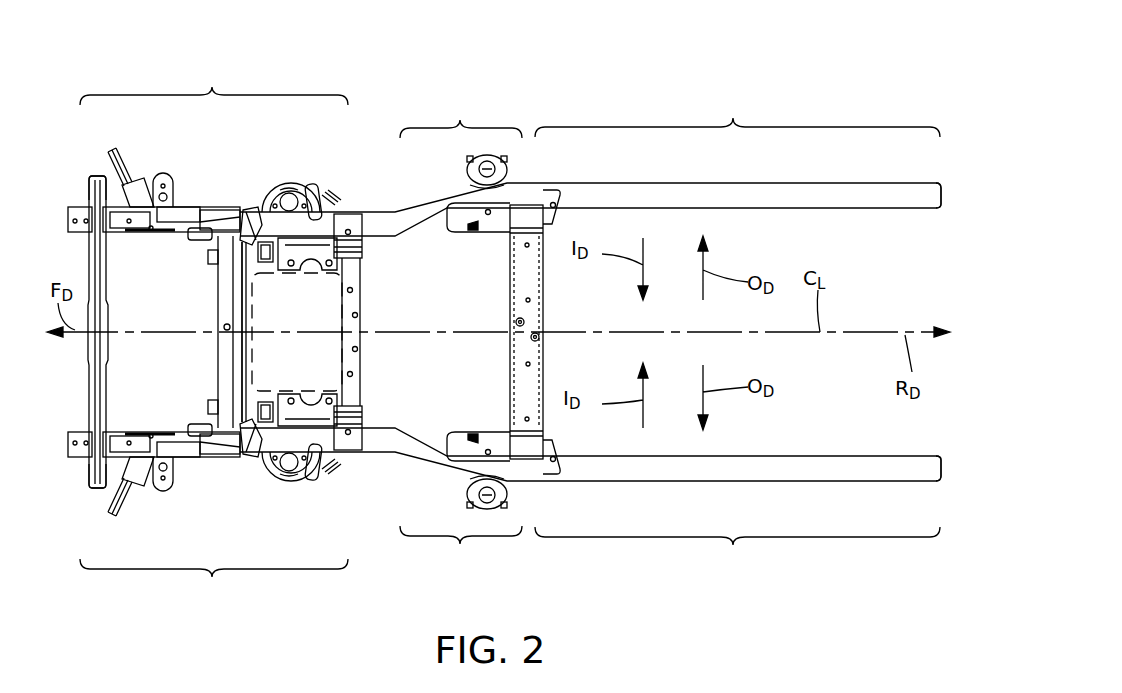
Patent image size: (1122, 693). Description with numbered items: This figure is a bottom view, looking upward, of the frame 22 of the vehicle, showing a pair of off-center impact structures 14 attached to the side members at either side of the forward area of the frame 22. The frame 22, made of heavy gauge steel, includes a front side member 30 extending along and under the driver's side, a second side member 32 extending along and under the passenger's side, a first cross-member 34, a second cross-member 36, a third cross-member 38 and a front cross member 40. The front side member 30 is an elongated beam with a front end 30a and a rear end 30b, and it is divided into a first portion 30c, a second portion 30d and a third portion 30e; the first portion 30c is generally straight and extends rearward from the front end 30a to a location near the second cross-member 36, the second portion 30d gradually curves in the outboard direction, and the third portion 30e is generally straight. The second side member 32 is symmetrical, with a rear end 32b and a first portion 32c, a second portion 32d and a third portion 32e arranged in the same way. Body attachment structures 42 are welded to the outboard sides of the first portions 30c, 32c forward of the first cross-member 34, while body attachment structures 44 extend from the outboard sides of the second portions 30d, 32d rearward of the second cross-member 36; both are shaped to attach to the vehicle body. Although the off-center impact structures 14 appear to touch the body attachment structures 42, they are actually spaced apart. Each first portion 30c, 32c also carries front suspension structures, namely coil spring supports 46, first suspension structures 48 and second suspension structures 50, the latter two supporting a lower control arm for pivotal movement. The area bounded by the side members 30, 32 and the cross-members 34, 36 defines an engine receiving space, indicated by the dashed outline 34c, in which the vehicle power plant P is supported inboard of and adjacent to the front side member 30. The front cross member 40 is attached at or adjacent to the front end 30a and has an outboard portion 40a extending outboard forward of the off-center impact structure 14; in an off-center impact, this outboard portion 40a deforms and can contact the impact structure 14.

The frame 22 is at (604, 76).
The off-center impact structure 14 is at (134, 158).
The front side member 30 is at (382, 202).
The front end 30a is at (70, 224).
The rear end 30b is at (953, 205).
The first portion 30c is at (214, 84).
The second portion 30d is at (461, 116).
The third portion 30e is at (737, 115).
The second side member 32 is at (383, 462).
The rear end 32b is at (953, 460).
The first portion 32c is at (214, 582).
The second portion 32d is at (461, 550).
The third portion 32e is at (737, 550).
The first cross-member 34 is at (232, 327).
The engine cradle area 34c is at (235, 299).
The second cross-member 36 is at (361, 354).
The third cross-member 38 is at (520, 277).
The front cross member 40 is at (110, 348).
The outboard portion 40a is at (93, 195).
The body attachment structure 42 is at (170, 188).
The body attachment structure 44 is at (470, 177).
The coil spring support 46 is at (279, 183).
The first suspension structure 48 is at (248, 215).
The second suspension structure 50 is at (348, 215).
The vehicle power plant P is at (240, 355).